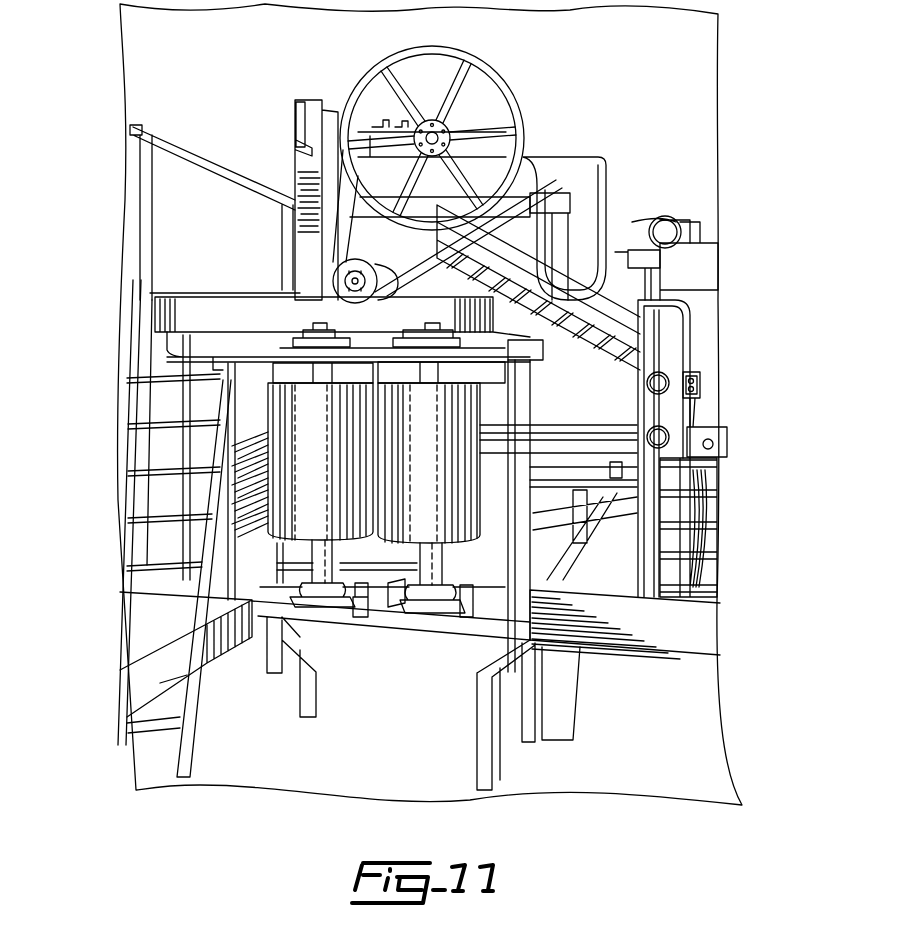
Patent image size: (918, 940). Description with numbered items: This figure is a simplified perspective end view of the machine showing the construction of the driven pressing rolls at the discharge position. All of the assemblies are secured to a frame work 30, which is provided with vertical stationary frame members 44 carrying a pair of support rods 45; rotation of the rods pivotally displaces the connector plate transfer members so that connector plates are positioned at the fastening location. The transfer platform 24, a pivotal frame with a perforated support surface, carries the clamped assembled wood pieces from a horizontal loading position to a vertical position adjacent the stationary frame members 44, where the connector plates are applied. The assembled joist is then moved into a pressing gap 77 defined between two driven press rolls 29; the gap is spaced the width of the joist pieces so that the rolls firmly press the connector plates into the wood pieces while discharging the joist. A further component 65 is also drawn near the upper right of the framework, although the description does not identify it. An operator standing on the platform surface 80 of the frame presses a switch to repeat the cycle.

The transfer platform 24 is at (538, 250).
The driven press rolls 29 is at (405, 537).
The frame work 30 is at (303, 167).
The vertical stationary frame members 44 is at (667, 327).
The support rods 45 is at (670, 430).
The valve assembly 65 is at (630, 245).
The pressing gap 77 is at (373, 457).
The platform surface 80 is at (223, 293).